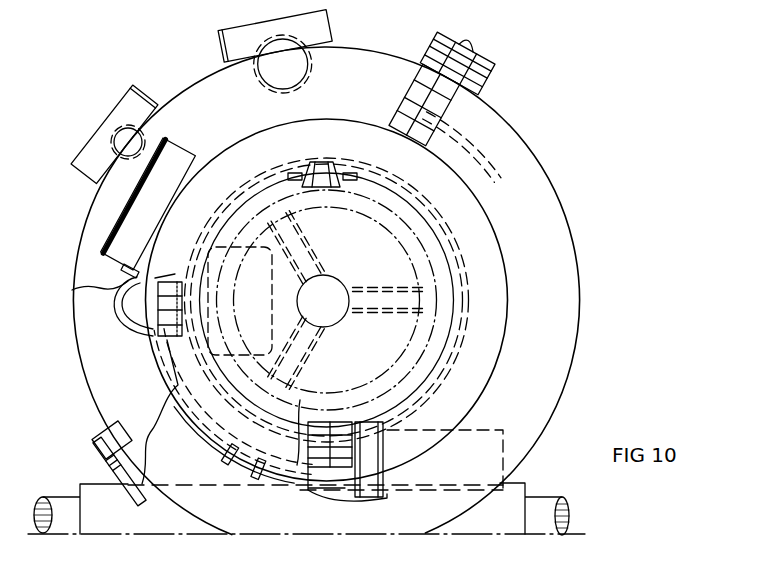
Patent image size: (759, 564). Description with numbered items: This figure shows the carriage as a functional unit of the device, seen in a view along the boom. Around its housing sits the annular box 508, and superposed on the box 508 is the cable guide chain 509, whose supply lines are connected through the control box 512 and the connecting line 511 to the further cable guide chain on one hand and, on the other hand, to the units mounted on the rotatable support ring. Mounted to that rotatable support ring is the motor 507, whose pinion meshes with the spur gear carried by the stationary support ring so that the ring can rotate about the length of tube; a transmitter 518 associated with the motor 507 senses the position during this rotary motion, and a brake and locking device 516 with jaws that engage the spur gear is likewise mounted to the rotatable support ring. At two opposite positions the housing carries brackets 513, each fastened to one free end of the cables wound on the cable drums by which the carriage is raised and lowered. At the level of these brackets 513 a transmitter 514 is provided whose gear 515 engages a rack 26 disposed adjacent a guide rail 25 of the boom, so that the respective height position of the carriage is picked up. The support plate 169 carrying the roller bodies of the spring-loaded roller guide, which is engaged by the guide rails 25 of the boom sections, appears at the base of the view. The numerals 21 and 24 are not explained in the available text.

The rotatable inner ring assembly 21 is at (425, 250).
The housing box 24 is at (231, 249).
The guide rail 25 is at (297, 468).
The rack 26 is at (341, 420).
The support plate 169 is at (306, 419).
The motor 507 is at (132, 115).
The annular box 508 is at (80, 363).
The cable guide chain 509 is at (118, 421).
The connecting line 511 is at (112, 318).
The control box 512 is at (135, 237).
The bracket 513 is at (478, 176).
The transmitter 514 is at (503, 452).
The gear 515 is at (345, 470).
The brake and locking device 516 is at (472, 86).
The transmitter 518 is at (243, 37).